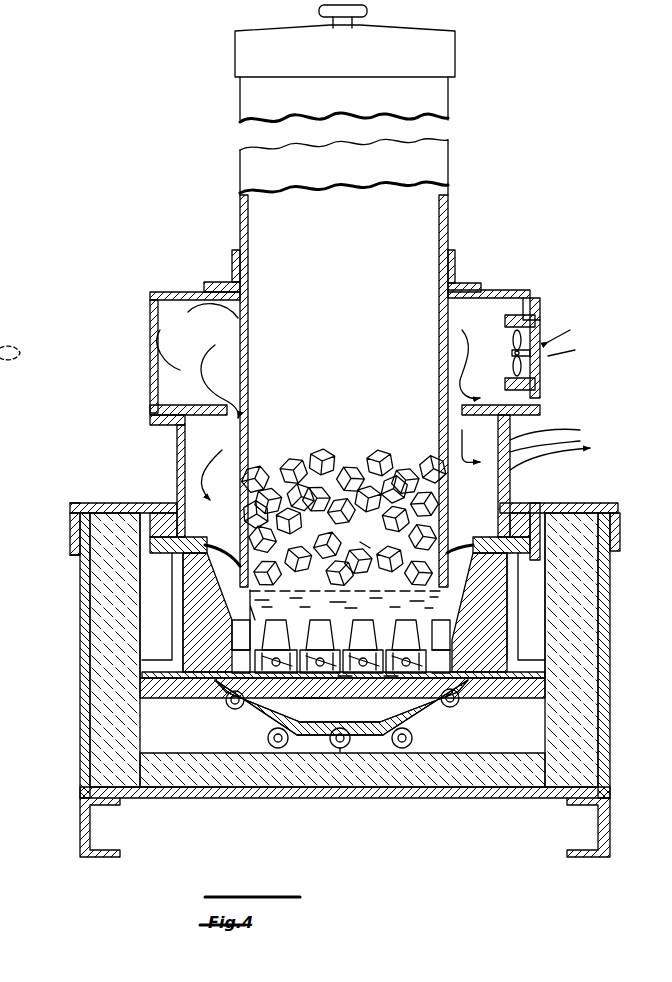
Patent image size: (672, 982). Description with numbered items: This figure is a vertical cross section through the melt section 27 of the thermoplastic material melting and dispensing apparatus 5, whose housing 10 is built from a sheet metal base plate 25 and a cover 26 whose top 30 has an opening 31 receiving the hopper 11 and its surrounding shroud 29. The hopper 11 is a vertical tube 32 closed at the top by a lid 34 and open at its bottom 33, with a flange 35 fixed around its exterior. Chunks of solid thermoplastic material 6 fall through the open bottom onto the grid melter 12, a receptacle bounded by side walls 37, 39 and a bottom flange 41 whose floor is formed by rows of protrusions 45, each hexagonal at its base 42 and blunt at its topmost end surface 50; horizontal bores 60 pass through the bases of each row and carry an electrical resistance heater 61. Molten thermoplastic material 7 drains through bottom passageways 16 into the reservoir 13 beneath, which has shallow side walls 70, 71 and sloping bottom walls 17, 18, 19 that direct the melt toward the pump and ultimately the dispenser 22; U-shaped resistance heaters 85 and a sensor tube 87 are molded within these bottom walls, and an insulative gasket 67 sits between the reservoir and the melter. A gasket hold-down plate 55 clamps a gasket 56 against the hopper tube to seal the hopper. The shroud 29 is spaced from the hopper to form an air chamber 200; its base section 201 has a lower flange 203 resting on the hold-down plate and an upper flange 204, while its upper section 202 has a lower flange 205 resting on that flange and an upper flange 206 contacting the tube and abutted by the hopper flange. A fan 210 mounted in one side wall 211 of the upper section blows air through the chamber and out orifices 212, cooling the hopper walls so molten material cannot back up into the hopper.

The thermoplastic material melting and dispensing apparatus 5 is at (42, 845).
The solid thermoplastic material 6 is at (376, 460).
The molten thermoplastic material 7 is at (341, 635).
The housing 10 is at (75, 700).
The hopper 11 is at (482, 193).
The grid melter 12 is at (490, 636).
The reservoir 13 is at (432, 714).
The bottom passageways 16 is at (352, 676).
The sloping bottom wall 17 is at (392, 676).
The sloping bottom wall 18 is at (318, 740).
The sloping bottom wall 19 is at (262, 714).
The dispenser 22 is at (12, 325).
The base plate 25 is at (122, 854).
The cover 26 is at (610, 584).
The melt section 27 is at (612, 694).
The shroud 29 is at (152, 422).
The top of the cover 30 is at (116, 504).
The opening 31 is at (170, 504).
The vertical tube 32 is at (344, 136).
The bottom of the hopper tube 33 is at (341, 649).
The lid 34 is at (345, 41).
The flange 35 is at (456, 268).
The side wall 37 is at (185, 604).
The side wall 39 is at (487, 606).
The bottom flange 41 is at (148, 655).
The base 42 is at (282, 672).
The protrusions 45 is at (300, 640).
The topmost end surfaces 50 is at (254, 620).
The gasket hold-down plate 55 is at (602, 504).
The gasket 56 is at (490, 508).
The horizontal bores 60 is at (345, 586).
The electrical resistance heater 61 is at (362, 554).
The insulative gasket 67 is at (540, 674).
The side wall 70 is at (198, 696).
The side wall 71 is at (500, 697).
The U-shaped resistance heaters 85 is at (268, 742).
The tube 87 is at (348, 748).
The air chamber 200 is at (158, 350).
The base section 201 is at (178, 455).
The upper section 202 is at (150, 390).
The lower flange 203 is at (186, 528).
The upper flange 204 is at (186, 436).
The lower flange 205 is at (252, 412).
The upper flange 206 is at (250, 312).
The fan 210 is at (545, 345).
The side wall 211 is at (540, 305).
The orifices 212 is at (538, 445).